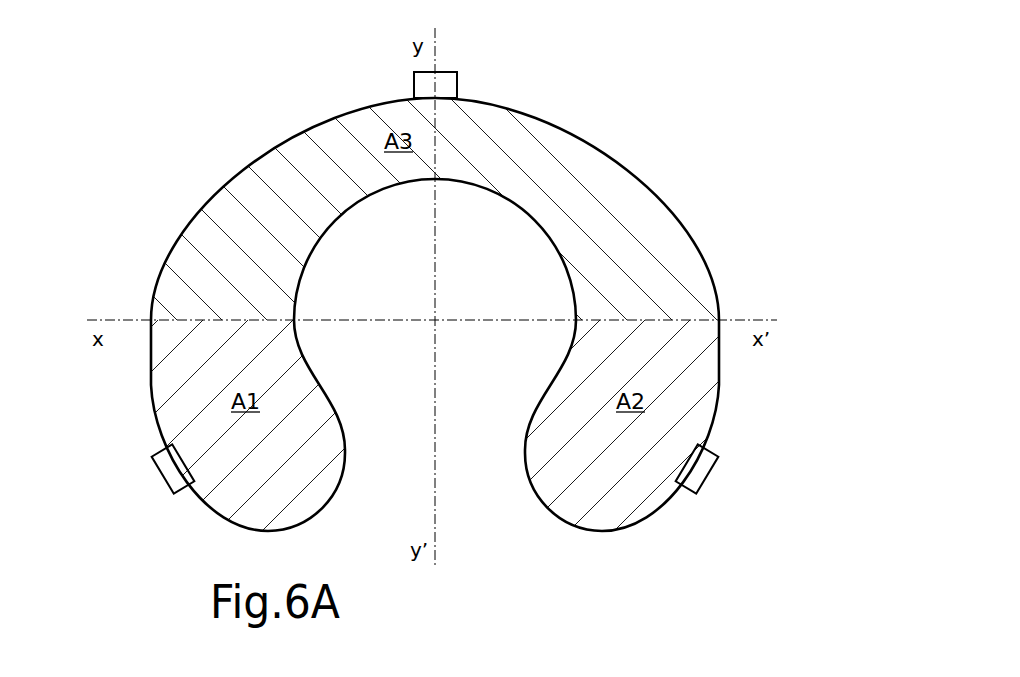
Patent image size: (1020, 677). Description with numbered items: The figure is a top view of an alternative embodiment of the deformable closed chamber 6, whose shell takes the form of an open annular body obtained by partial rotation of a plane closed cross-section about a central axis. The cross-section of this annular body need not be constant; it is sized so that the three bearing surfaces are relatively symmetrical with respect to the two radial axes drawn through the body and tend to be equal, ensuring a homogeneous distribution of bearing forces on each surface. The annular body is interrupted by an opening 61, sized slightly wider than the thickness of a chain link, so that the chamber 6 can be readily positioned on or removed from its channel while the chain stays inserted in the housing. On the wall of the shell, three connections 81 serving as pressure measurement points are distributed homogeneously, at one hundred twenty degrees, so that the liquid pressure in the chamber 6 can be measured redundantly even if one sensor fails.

The chamber 6 is at (640, 124).
The opening 61 is at (467, 509).
The connection / pressure measurement point 81 is at (455, 84).